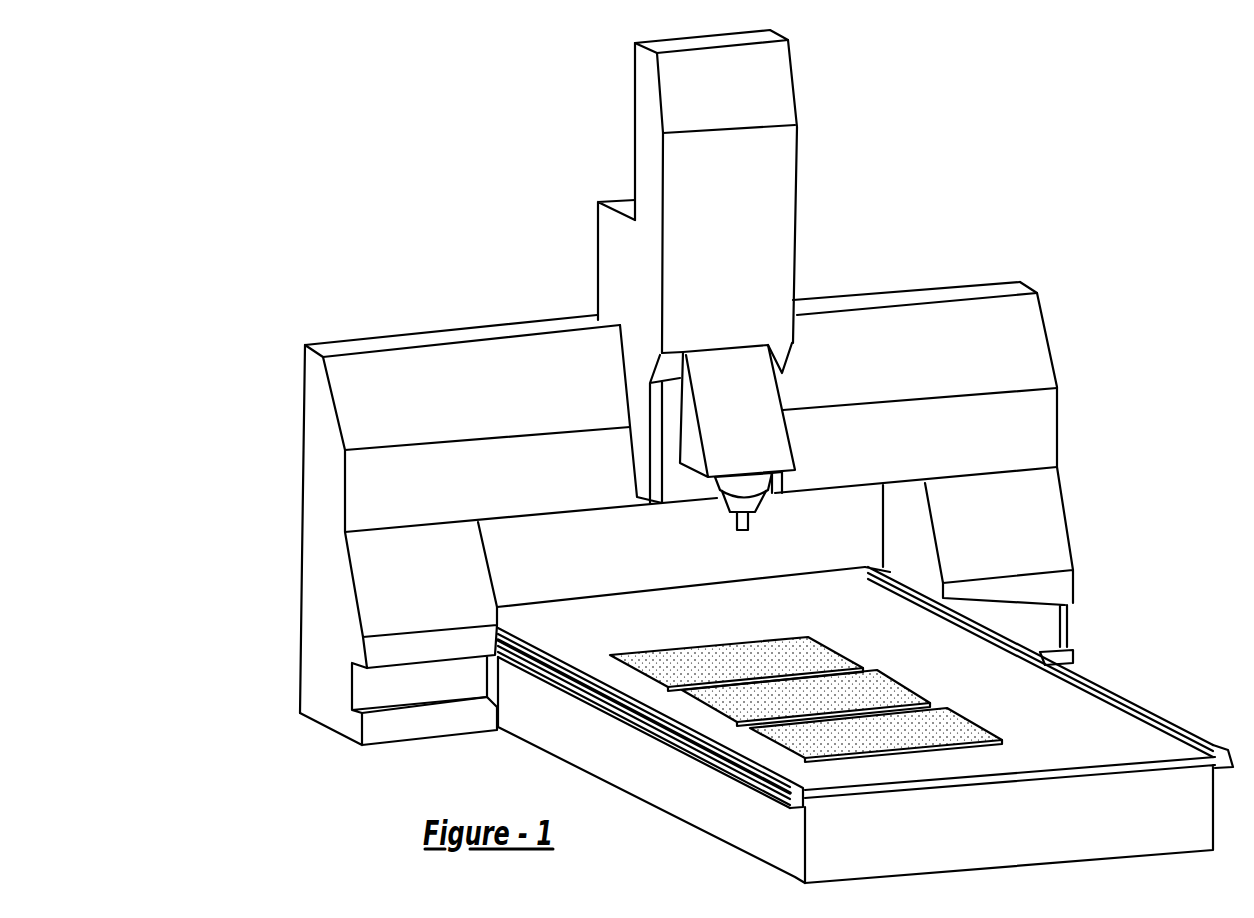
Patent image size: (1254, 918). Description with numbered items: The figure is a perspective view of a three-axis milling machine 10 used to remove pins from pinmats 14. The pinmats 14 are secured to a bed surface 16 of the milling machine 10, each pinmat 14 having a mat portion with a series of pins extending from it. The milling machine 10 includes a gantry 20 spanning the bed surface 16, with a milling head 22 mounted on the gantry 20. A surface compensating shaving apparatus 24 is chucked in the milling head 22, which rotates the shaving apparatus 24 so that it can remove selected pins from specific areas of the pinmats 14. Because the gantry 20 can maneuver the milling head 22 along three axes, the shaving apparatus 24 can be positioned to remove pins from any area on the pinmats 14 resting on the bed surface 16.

The three-axis milling machine 10 is at (722, 456).
The pinmat 14 is at (838, 652).
The bed surface 16 is at (1120, 727).
The gantry 20 is at (915, 290).
The milling head 22 is at (795, 447).
The surface compensating shaving apparatus 24 is at (748, 528).